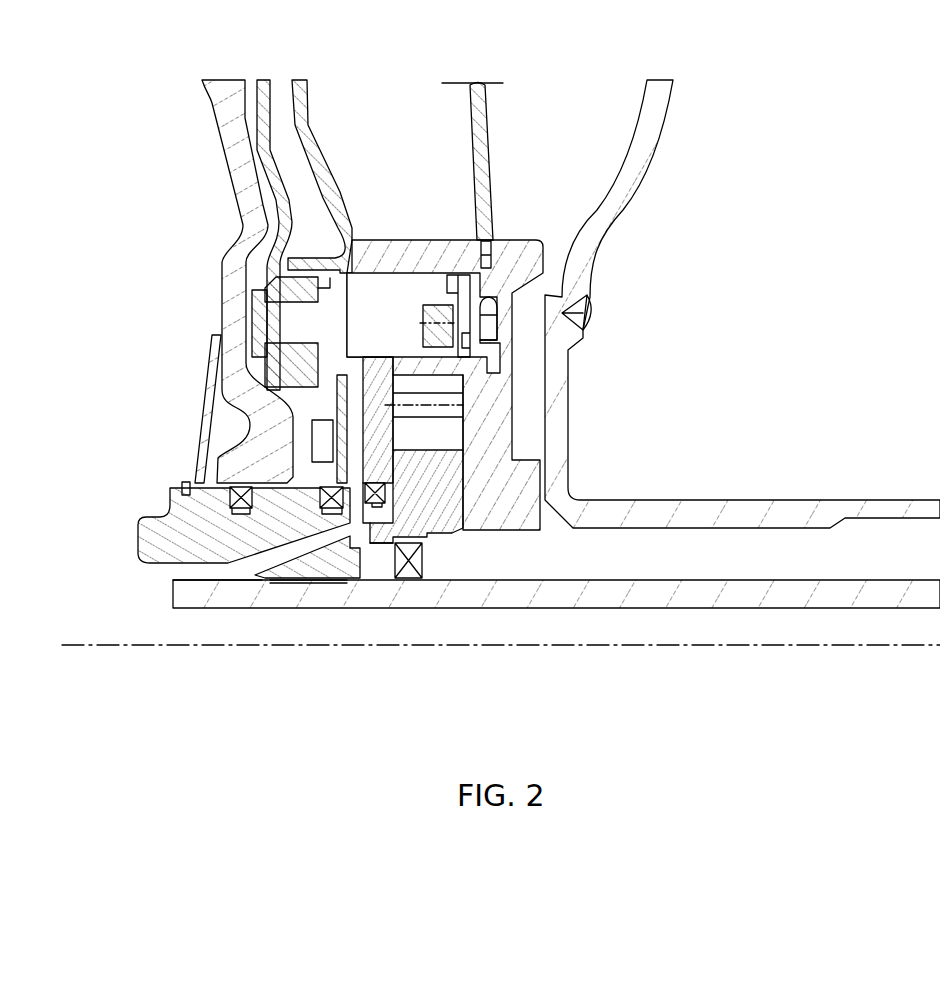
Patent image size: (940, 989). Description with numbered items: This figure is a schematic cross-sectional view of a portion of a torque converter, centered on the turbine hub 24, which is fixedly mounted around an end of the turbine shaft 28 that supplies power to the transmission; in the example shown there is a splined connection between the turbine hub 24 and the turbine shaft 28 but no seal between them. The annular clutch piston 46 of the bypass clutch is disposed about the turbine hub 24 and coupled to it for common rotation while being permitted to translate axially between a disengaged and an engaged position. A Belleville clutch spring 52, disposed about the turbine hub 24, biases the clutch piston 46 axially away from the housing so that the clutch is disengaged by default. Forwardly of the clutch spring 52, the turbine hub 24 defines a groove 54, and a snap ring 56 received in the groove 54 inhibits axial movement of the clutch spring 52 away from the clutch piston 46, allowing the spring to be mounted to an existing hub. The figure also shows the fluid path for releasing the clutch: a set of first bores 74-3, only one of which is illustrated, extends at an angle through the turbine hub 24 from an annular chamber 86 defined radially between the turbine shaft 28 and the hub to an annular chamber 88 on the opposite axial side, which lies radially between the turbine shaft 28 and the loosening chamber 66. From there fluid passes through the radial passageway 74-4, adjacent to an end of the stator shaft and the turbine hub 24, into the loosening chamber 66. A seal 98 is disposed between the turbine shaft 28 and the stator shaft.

The turbine hub 24 is at (165, 548).
The turbine shaft 28 is at (594, 592).
The clutch piston 46 is at (220, 275).
The clutch spring 52 is at (212, 357).
The groove 54 is at (187, 500).
The snap ring 56 is at (190, 482).
The loosening chamber 66 is at (363, 327).
The first bores 74-3 is at (279, 570).
The radial passageway 74-4 is at (348, 410).
The annular chamber 86 is at (190, 570).
The annular chamber 88 is at (372, 570).
The seal 98 is at (407, 570).